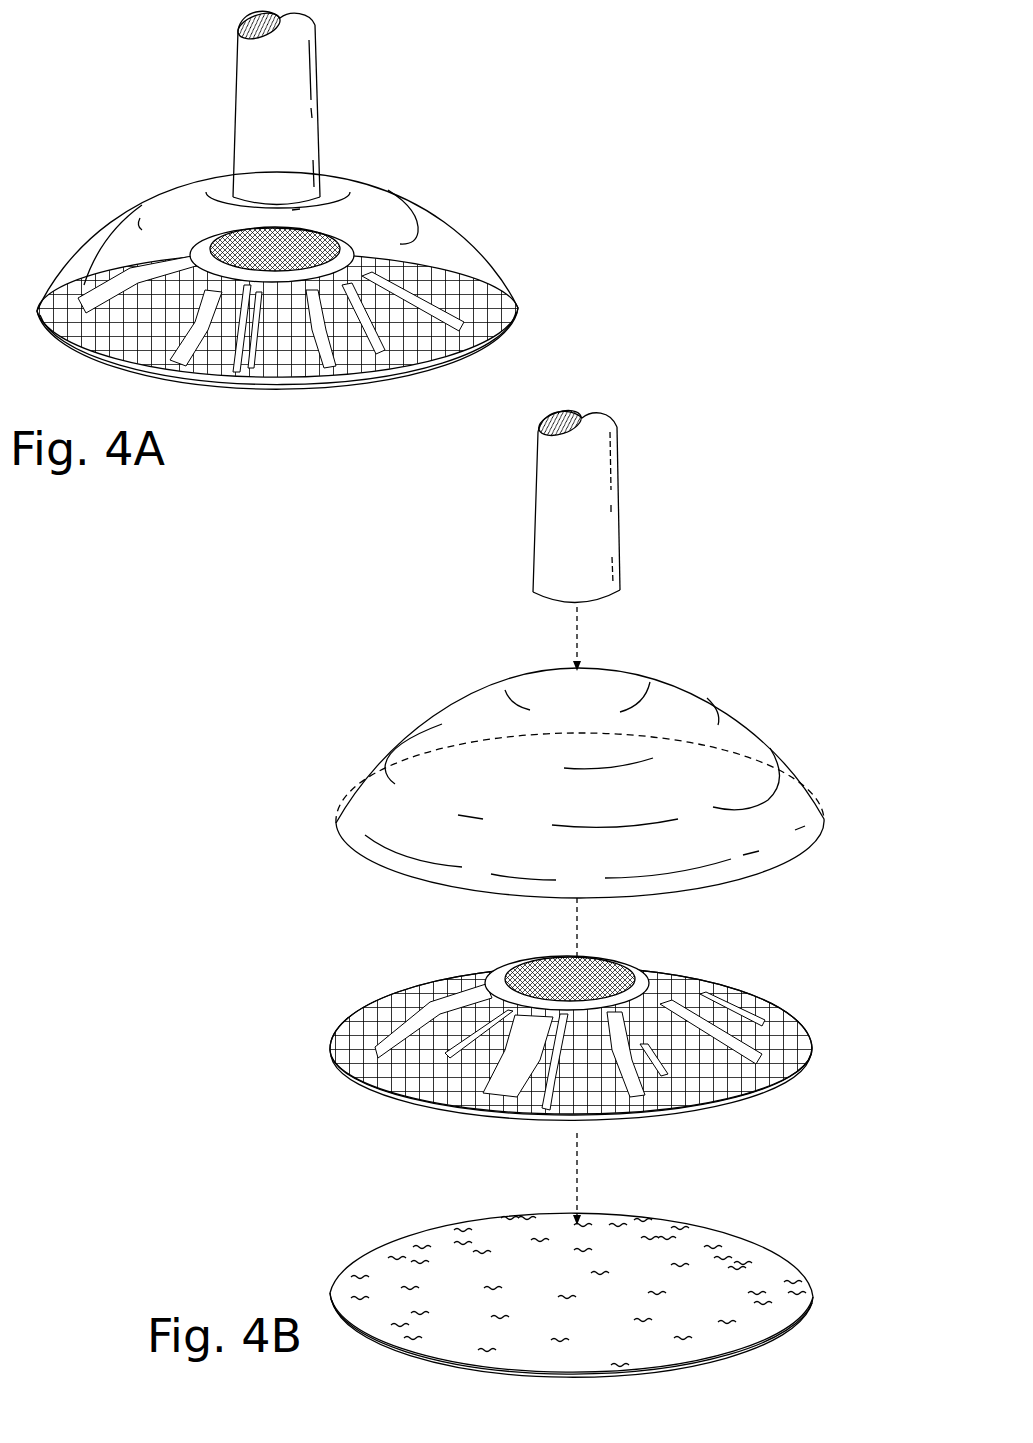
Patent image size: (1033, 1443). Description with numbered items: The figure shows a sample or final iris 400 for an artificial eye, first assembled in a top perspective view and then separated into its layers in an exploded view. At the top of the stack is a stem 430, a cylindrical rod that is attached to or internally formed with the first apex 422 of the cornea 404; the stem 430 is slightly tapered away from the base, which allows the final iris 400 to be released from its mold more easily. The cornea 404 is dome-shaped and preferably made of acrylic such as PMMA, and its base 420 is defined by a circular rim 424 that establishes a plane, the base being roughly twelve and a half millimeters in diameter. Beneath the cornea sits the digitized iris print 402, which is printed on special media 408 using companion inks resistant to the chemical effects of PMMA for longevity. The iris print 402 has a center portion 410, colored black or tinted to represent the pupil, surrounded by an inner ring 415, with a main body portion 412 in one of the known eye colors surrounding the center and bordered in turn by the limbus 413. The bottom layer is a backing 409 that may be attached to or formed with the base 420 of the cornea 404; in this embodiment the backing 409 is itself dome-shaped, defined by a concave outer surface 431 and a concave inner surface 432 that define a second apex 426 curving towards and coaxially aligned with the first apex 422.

In FIG. 4A, the final iris 400 is at (112, 72).
In FIG. 4A, the digitized iris print 402 is at (484, 288).
In FIG. 4B, the digitized iris print 402 is at (547, 1007).
In FIG. 4A, the cornea 404 is at (400, 208).
In FIG. 4B, the cornea 404 is at (735, 713).
In FIG. 4B, the special media 408 is at (756, 1116).
In FIG. 4B, the backing 409 is at (583, 1277).
In FIG. 4B, the center portion 410 is at (613, 963).
In FIG. 4B, the main body portion 412 is at (775, 1020).
In FIG. 4B, the limbus 413 is at (810, 1055).
In FIG. 4B, the inner ring 415 is at (648, 973).
In FIG. 4B, the base 420 is at (330, 818).
In FIG. 4B, the first apex 422 is at (590, 672).
In FIG. 4B, the circular rim 424 is at (800, 843).
In FIG. 4B, the second apex 426 is at (585, 1226).
In FIG. 4B, the stem 430 is at (612, 470).
In FIG. 4B, the concave outer surface 431 is at (748, 1365).
In FIG. 4B, the concave inner surface 432 is at (445, 1257).